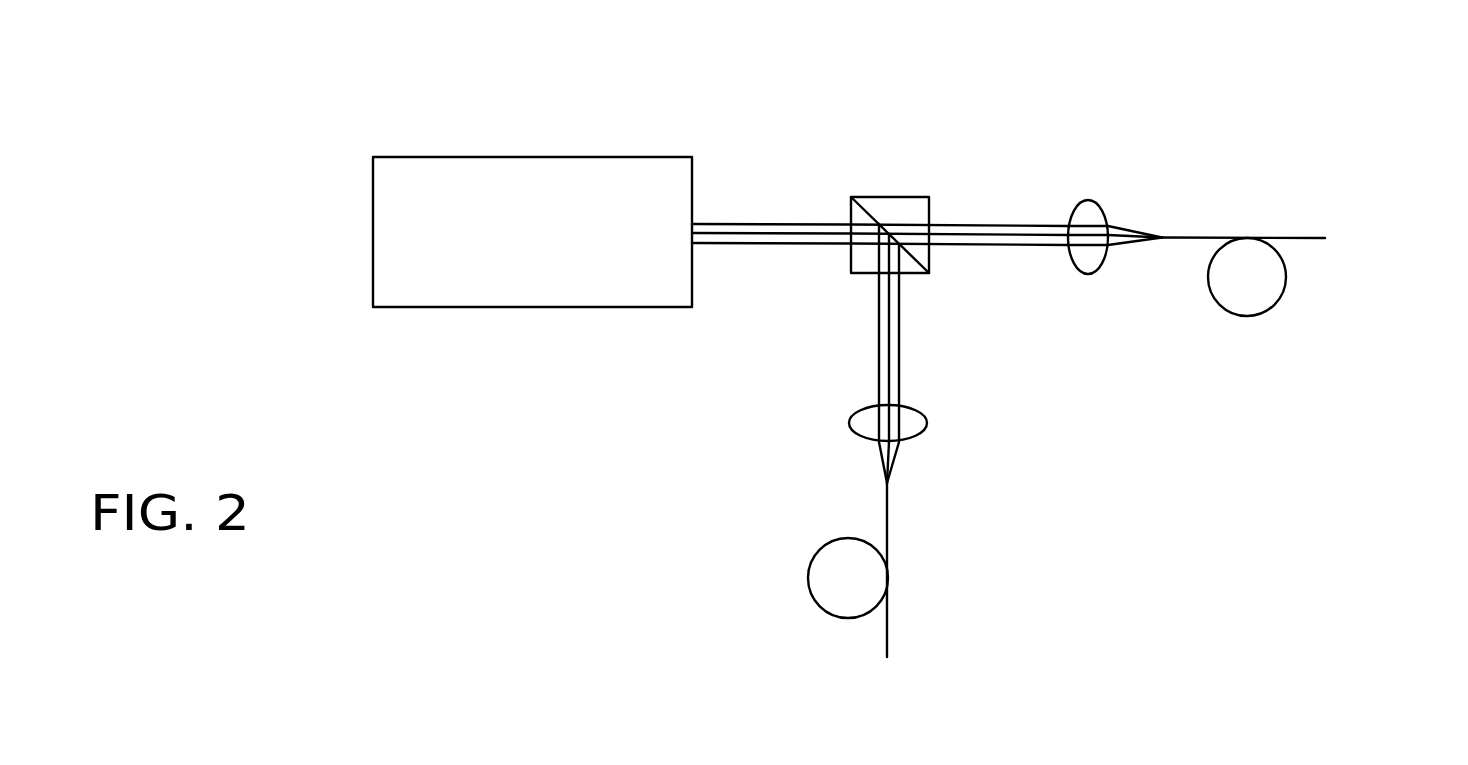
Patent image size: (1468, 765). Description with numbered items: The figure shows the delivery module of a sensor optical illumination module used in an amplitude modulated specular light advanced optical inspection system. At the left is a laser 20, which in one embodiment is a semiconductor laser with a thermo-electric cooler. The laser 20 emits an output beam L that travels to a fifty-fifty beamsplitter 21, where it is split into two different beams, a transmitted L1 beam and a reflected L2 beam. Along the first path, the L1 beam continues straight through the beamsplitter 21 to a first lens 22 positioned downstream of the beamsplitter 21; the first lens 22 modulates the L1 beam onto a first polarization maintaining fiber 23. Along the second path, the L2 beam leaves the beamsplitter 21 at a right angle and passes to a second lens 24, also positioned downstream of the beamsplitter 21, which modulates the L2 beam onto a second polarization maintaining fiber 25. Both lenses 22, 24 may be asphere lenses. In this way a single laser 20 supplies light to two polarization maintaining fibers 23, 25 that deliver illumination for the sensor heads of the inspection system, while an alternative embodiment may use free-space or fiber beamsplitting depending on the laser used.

The laser 20 is at (562, 157).
The output beam L is at (750, 223).
The 50/50 beamsplitter 21 is at (928, 227).
The L1 beam L1 is at (1002, 247).
The first lens 22 is at (1102, 200).
The first polarization maintaining fiber 23 is at (1283, 237).
The L2 beam L2 is at (880, 298).
The second lens 24 is at (927, 423).
The second polarization maintaining fiber 25 is at (887, 615).